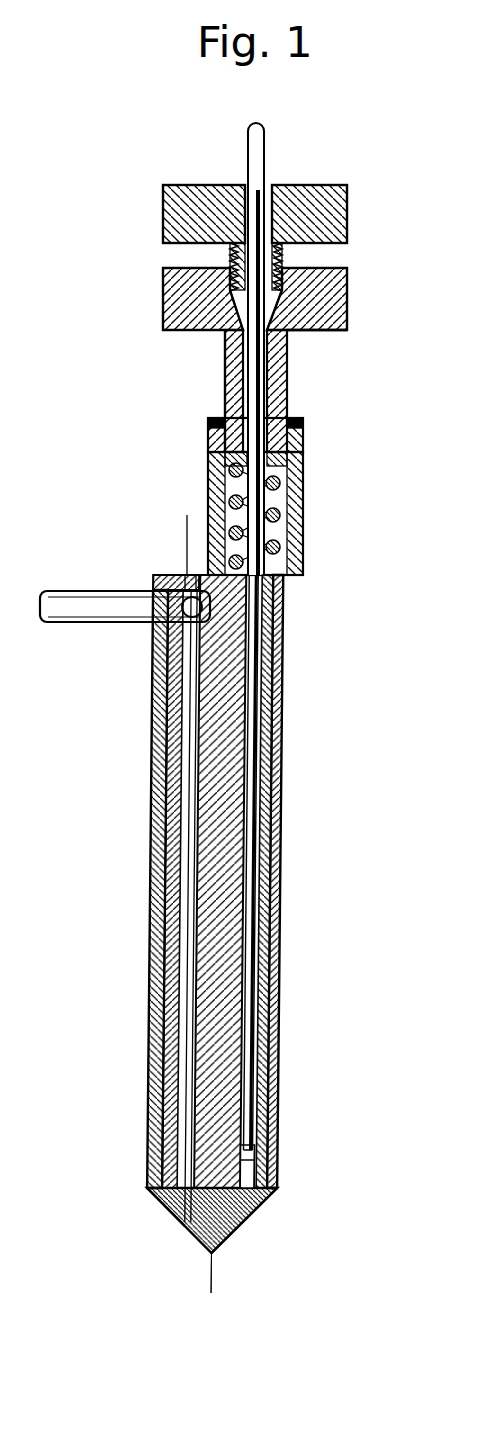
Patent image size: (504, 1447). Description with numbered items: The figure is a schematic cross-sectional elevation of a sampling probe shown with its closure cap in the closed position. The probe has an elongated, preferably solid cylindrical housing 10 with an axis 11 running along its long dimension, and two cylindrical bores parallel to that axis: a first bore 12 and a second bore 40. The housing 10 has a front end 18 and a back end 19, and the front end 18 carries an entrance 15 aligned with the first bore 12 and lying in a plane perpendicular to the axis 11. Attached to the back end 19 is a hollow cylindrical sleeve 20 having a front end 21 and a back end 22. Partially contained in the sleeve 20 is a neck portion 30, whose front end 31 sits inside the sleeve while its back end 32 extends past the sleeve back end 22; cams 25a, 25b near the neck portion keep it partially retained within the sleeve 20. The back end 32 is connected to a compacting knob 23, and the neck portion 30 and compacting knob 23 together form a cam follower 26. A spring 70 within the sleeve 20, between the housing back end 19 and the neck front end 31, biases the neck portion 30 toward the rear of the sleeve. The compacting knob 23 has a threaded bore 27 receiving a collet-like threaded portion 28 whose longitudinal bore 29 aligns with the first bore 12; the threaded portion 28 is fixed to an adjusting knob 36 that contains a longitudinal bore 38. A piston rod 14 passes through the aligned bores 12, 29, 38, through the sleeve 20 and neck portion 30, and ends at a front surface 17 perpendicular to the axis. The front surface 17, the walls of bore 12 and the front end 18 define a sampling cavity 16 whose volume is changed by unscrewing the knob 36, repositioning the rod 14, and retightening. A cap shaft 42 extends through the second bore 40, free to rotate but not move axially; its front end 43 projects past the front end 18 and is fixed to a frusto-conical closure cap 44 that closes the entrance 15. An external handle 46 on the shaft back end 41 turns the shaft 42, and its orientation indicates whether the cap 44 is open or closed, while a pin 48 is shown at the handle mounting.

The housing 10 is at (291, 800).
The axis 11 is at (226, 832).
The first bore 12 is at (269, 932).
The piston rod 14 is at (257, 1010).
The entrance 15 is at (285, 1175).
The sampling cavity 16 is at (262, 1162).
The front surface 17 is at (266, 1155).
The front end 18 is at (268, 1213).
The back end 19 is at (289, 598).
The sleeve 20 is at (303, 490).
The front end 21 is at (298, 577).
The back end 22 is at (222, 420).
The compacting knob 23 is at (348, 298).
The cam 25a is at (303, 438).
The cam 25b is at (208, 450).
The cam follower 26 is at (206, 343).
The threaded bore 27 is at (288, 262).
The threaded portion 28 is at (228, 255).
The longitudinal bore 29 is at (230, 292).
The neck portion 30 is at (293, 375).
The front end 31 is at (303, 465).
The back end 32 is at (290, 333).
The knob 36 is at (348, 205).
The longitudinal bore 38 is at (270, 200).
The second bore 40 is at (186, 828).
The back end 41 is at (187, 515).
The cap shaft 42 is at (192, 922).
The front end 43 is at (190, 1215).
The closure cap 44 is at (254, 1230).
The external handle 46 is at (128, 607).
The pin 48 is at (158, 578).
The spring 70 is at (290, 525).